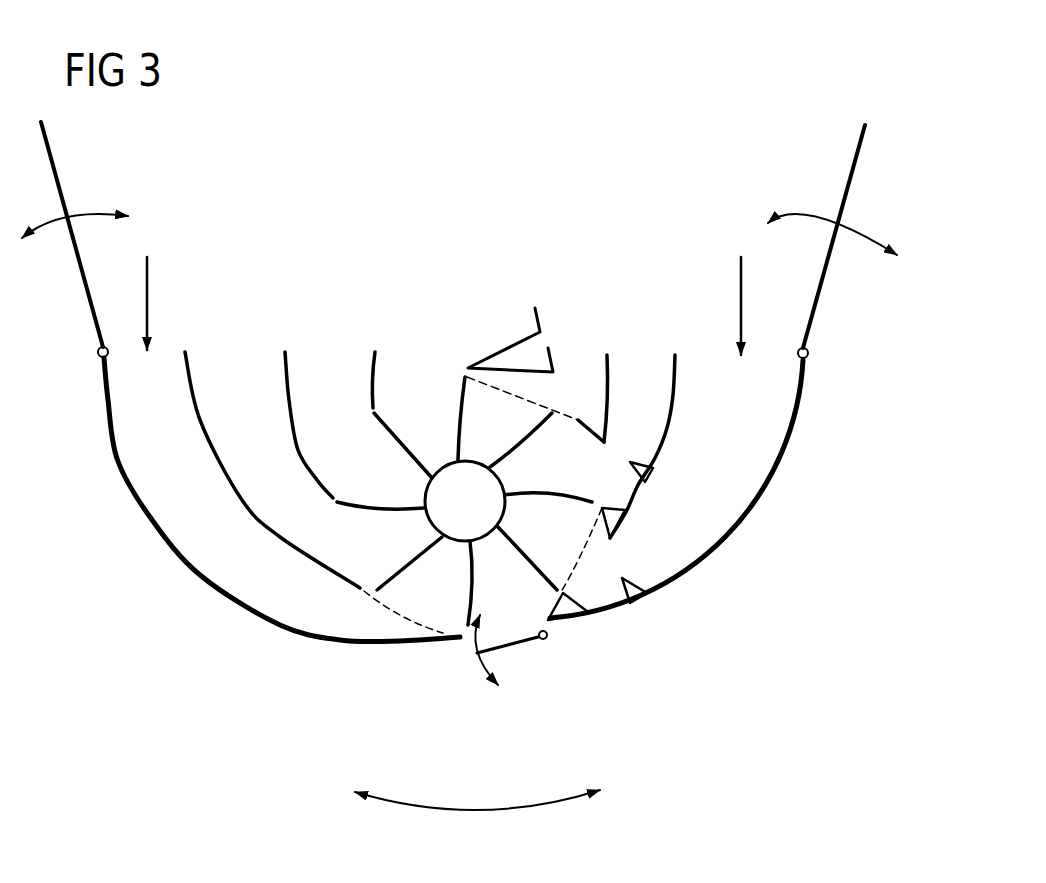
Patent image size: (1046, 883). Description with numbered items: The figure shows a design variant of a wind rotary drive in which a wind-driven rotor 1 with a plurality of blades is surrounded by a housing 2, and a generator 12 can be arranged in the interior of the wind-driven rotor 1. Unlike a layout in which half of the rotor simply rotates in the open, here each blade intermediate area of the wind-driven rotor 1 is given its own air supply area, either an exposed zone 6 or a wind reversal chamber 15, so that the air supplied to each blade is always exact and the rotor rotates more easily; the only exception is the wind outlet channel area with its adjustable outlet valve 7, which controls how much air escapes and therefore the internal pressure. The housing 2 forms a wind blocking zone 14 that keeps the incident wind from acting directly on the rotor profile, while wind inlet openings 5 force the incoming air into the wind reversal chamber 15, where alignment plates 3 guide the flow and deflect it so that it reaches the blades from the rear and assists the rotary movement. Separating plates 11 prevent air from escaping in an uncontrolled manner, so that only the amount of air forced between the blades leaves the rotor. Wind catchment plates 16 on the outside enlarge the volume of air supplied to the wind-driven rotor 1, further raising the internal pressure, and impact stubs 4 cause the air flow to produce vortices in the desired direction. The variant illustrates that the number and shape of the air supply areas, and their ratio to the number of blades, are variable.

The wind-driven rotor 1 is at (442, 470).
The housing 2 is at (625, 598).
The alignment plates 3 is at (613, 442).
The impact stubs 4 is at (647, 473).
The wind inlet openings 5 is at (652, 372).
The exposed zone 6 is at (245, 368).
The outlet valve 7 is at (513, 647).
The separating plates 11 is at (583, 560).
The generator 12 is at (452, 518).
The wind blocking zone 14 is at (508, 362).
The wind reversal chamber 15 is at (597, 425).
The wind catchment plates 16 is at (847, 198).